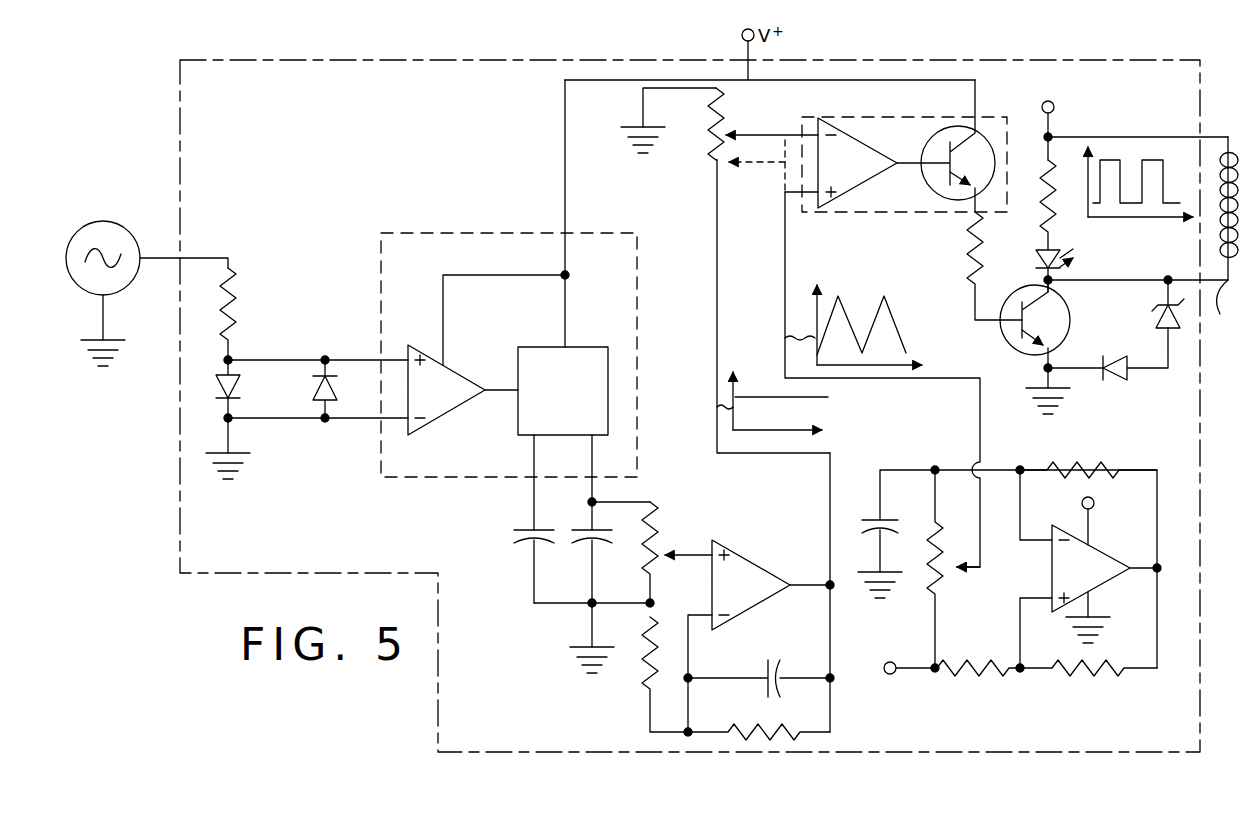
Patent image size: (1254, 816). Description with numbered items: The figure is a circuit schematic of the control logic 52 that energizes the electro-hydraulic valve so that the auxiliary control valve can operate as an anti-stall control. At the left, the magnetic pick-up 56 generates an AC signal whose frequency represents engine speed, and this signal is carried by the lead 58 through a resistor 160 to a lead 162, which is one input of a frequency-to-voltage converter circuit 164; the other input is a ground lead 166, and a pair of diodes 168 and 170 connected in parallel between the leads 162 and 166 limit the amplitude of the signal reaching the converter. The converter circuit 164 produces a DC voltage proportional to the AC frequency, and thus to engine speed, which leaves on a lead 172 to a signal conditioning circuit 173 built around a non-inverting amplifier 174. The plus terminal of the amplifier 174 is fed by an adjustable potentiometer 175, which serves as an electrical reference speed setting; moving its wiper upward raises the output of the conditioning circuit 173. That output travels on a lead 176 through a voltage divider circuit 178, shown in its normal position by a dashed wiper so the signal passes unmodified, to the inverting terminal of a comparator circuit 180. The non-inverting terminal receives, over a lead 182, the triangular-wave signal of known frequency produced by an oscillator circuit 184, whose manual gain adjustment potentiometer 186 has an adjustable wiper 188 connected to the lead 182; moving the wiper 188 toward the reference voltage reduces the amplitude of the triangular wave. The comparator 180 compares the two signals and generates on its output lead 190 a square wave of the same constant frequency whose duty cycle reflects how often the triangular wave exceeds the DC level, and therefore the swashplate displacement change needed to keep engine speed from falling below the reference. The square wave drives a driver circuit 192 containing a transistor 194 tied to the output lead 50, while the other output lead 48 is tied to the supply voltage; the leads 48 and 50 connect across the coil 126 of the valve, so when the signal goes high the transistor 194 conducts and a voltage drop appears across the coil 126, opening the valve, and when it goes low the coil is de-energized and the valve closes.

The output lead 48 is at (1228, 137).
The output lead 50 is at (1225, 311).
The control logic 52 is at (172, 156).
The magnetic pick-up 56 is at (111, 220).
The lead 58 is at (152, 262).
The coil 126 is at (1212, 233).
The resistor 160 is at (243, 302).
The lead 162 is at (286, 359).
The frequency-to-voltage converter circuit 164 is at (492, 228).
The ground lead 166 is at (283, 419).
The diode 168 is at (242, 388).
The diode 170 is at (340, 402).
The lead 172 is at (593, 455).
The signal conditioning circuit 173 is at (615, 690).
The non-inverting amplifier 174 is at (748, 556).
The adjustable potentiometer 175 is at (670, 526).
The lead 176 is at (718, 315).
The voltage divider circuit 178 is at (747, 117).
The comparator circuit 180 is at (907, 110).
The lead 182 is at (785, 235).
The oscillator circuit 184 is at (1026, 686).
The manual gain adjustment potentiometer 186 is at (952, 586).
The adjustable wiper 188 is at (974, 568).
The output lead 190 is at (972, 297).
The driver circuit 192 is at (1084, 392).
The transistor 194 is at (1071, 323).